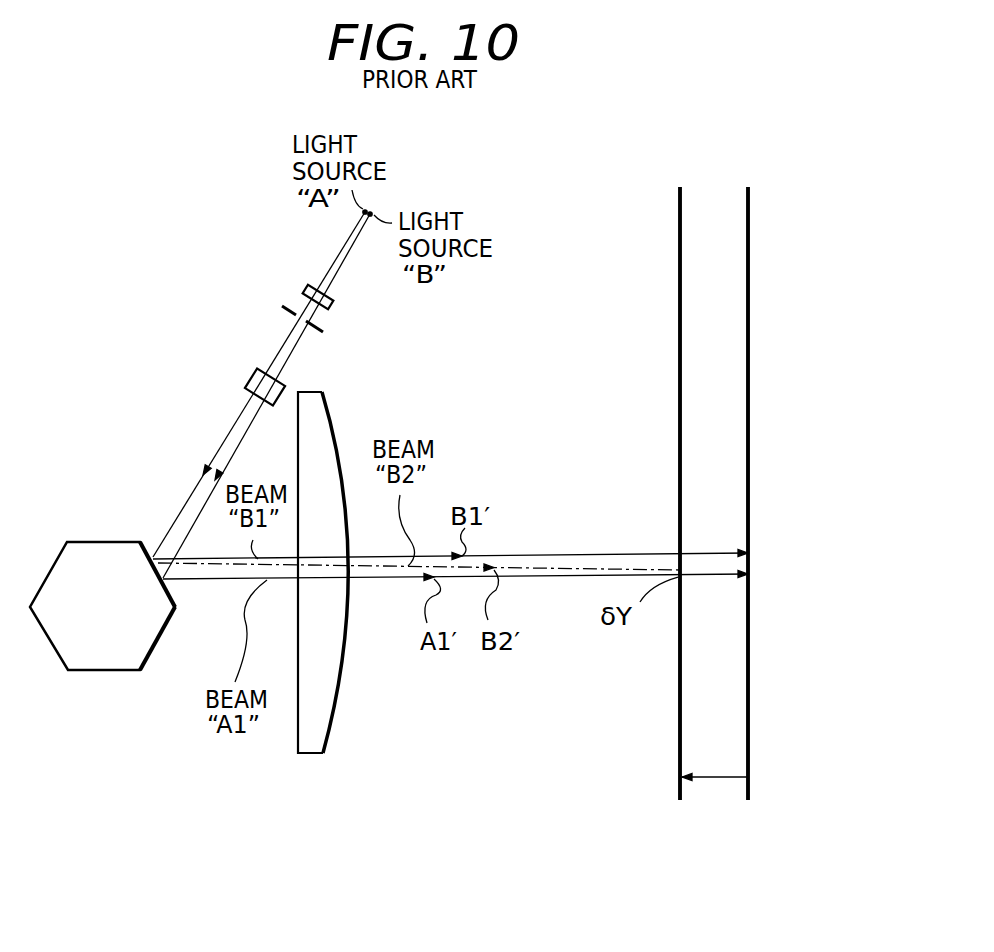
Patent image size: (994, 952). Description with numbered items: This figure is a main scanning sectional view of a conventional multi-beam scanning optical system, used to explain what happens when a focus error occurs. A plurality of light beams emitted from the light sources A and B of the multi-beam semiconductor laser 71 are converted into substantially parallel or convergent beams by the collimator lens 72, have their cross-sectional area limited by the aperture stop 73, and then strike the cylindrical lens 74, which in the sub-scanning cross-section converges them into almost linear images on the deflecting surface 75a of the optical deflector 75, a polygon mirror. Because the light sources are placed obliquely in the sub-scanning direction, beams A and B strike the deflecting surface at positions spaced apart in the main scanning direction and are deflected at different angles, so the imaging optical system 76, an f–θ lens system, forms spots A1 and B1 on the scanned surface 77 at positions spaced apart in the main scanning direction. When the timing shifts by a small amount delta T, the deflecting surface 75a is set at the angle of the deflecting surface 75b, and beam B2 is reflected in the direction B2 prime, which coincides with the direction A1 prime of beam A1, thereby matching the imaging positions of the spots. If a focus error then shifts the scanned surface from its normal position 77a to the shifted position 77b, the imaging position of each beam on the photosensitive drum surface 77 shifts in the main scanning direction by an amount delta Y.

The multi-beam semiconductor laser 71 is at (485, 197).
The collimator lens 72 is at (305, 292).
The aperture stop 73 is at (282, 310).
The cylindrical lens 74 is at (248, 378).
The optical deflector 75 is at (110, 663).
The deflecting surface 75a is at (182, 603).
The deflecting surface 75b is at (147, 547).
The imaging optical system 76 is at (322, 723).
The photosensitive drum surface 77 is at (679, 208).
The normal position of scanned surface 77a is at (749, 245).
The shifted position of scanned surface 77b is at (679, 255).